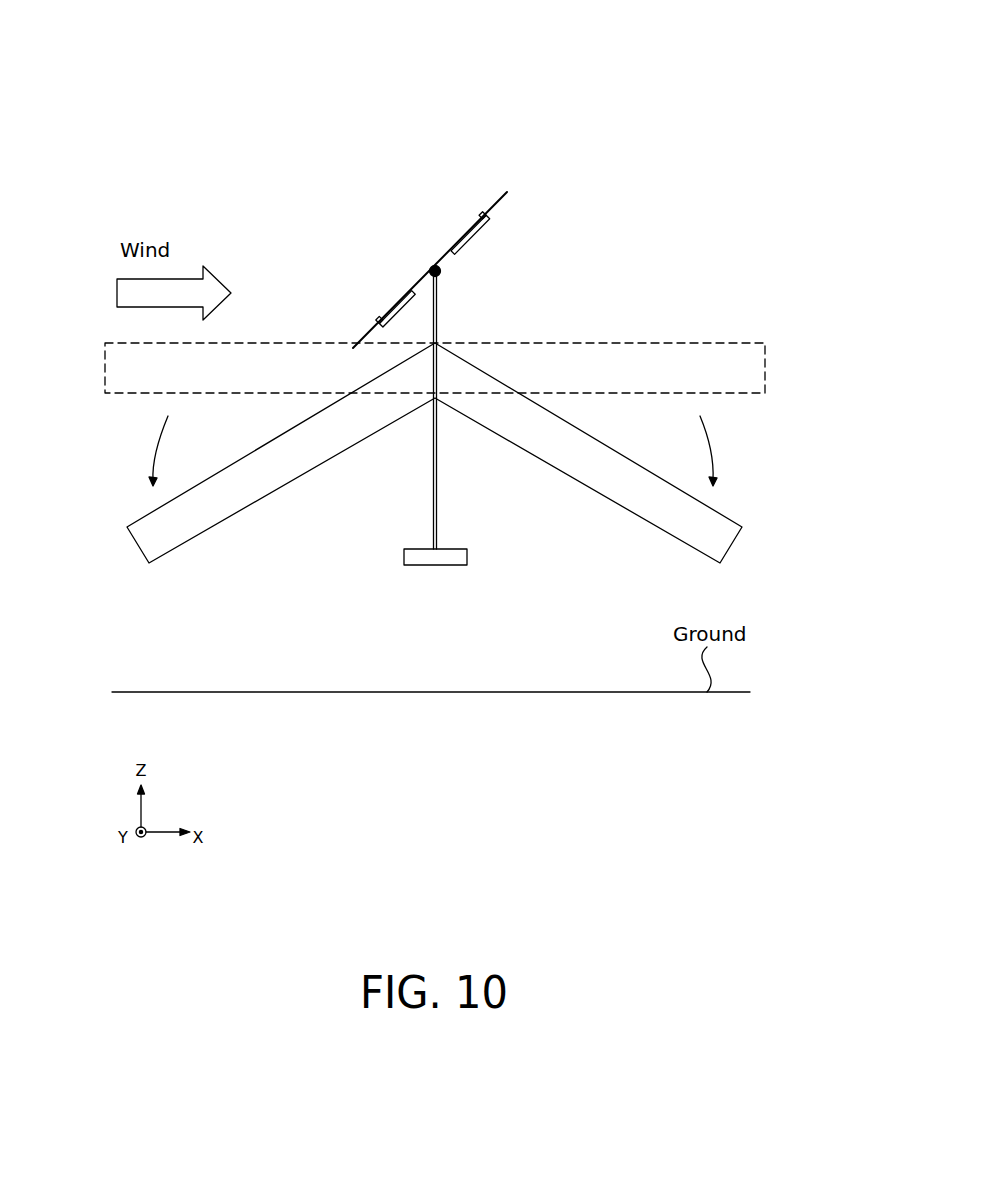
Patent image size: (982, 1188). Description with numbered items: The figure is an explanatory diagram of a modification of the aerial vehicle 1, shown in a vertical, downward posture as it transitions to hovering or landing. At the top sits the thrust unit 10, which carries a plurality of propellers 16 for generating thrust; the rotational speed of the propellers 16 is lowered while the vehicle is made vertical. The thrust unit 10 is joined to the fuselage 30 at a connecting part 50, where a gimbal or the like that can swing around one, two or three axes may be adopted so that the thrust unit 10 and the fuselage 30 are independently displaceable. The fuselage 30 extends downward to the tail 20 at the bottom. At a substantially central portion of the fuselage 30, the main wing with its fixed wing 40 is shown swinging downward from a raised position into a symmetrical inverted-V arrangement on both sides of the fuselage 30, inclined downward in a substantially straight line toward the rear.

The aerial vehicle 1 is at (424, 142).
The thrust unit 10 is at (382, 264).
The propellers 16 is at (467, 230).
The tail 20 is at (467, 553).
The fuselage 30 is at (438, 492).
The upper fixed wing 40 is at (650, 340).
The pivot joint 50 is at (443, 270).